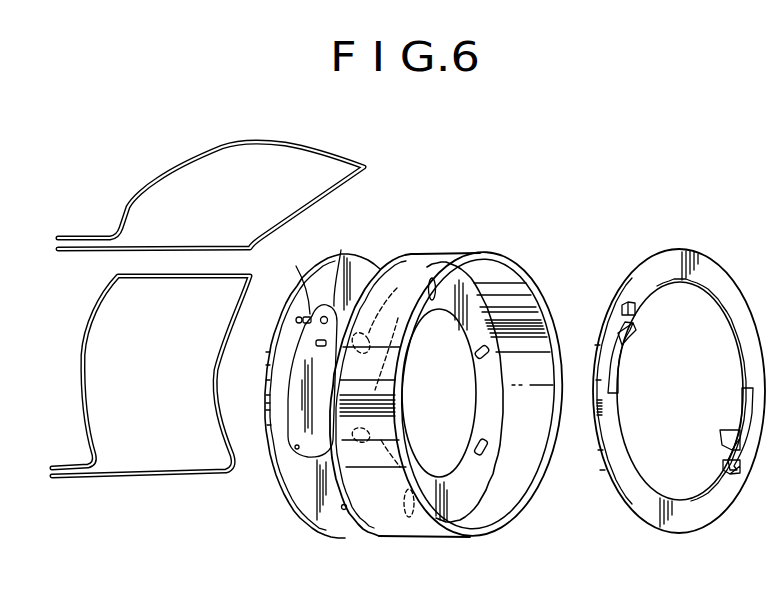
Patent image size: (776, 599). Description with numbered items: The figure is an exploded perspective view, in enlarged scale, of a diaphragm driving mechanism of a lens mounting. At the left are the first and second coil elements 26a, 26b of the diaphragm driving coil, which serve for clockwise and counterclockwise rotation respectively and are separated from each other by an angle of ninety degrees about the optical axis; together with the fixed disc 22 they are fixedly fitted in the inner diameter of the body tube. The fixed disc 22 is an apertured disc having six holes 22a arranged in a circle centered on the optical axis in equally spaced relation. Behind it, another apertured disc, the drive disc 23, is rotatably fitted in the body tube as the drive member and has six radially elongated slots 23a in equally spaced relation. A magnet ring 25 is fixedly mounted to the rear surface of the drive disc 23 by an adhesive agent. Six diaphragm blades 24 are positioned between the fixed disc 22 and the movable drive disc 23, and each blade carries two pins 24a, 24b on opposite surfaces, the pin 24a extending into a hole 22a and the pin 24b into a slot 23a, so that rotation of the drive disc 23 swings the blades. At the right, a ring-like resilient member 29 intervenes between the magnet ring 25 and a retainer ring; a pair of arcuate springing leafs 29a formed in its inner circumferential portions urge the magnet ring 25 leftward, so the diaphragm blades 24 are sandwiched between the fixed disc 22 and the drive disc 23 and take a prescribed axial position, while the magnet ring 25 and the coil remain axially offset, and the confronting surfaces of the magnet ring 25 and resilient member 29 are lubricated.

The fixed disc 22 is at (330, 523).
The hole 22a is at (296, 320).
The drive disc 23 is at (378, 527).
The slot 23a is at (407, 295).
The diaphragm blade 24 is at (298, 433).
The pin 24a is at (295, 277).
The pin 24b is at (343, 266).
The magnet ring 25 is at (518, 262).
The first coil element 26a is at (336, 151).
The second coil element 26b is at (160, 474).
The resilient member 29 is at (700, 262).
The arcuate springing leaf 29a is at (634, 329).